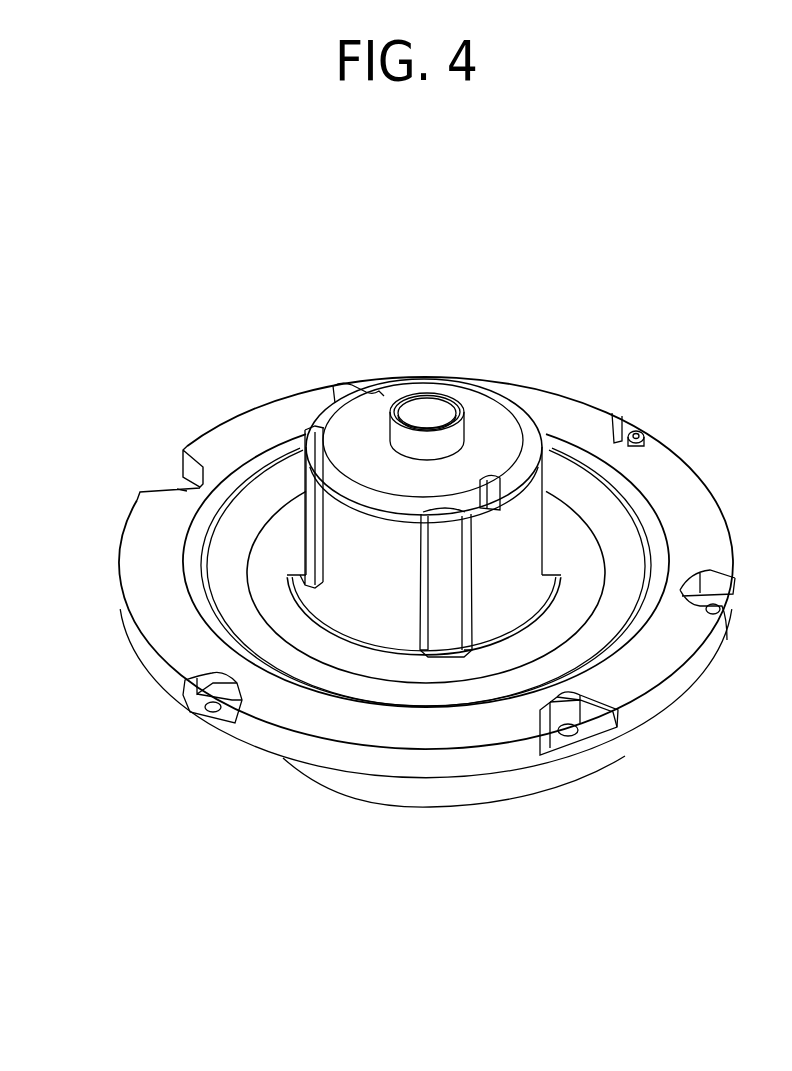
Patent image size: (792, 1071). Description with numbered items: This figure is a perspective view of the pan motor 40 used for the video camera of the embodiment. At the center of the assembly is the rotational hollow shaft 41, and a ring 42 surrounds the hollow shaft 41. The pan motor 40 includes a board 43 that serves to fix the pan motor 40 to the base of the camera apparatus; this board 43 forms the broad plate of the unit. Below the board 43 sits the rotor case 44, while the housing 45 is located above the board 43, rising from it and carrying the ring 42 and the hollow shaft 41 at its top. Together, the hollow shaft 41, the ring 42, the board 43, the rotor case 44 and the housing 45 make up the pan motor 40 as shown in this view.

The pan motor 40 is at (328, 338).
The rotational hollow shaft 41 is at (433, 410).
The ring 42 is at (358, 408).
The board 43 is at (165, 676).
The rotor case 44 is at (397, 792).
The housing 45 is at (330, 555).